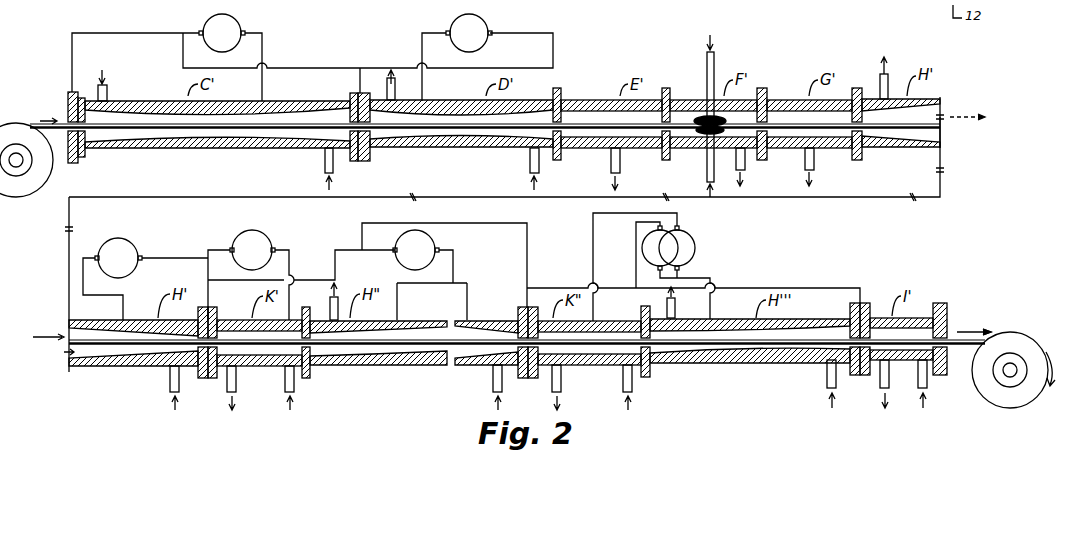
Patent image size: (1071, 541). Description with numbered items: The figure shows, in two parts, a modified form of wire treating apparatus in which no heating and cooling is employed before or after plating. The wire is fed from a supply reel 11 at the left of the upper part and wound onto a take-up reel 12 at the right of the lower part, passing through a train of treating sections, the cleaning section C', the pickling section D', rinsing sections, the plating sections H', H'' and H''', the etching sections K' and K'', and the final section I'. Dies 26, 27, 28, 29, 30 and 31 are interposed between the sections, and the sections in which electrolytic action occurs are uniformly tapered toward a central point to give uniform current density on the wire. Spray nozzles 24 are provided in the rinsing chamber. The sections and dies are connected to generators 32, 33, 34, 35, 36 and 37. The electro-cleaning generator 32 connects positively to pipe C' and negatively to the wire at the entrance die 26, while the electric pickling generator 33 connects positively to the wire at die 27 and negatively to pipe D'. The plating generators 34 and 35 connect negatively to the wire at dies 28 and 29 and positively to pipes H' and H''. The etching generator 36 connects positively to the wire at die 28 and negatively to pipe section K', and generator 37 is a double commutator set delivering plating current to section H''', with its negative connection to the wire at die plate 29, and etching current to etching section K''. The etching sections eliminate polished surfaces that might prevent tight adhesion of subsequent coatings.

The supply reel 11 is at (18, 197).
The take-up reel 12 is at (1006, 408).
The spray nozzles 24 is at (718, 62).
The entrance die 26 is at (68, 92).
The die 27 is at (352, 92).
The die 28 is at (217, 307).
The die plate 29 is at (520, 307).
The die 30 is at (870, 303).
The die 31 is at (947, 303).
The electro-cleaning generator 32 is at (312, 57).
The electric pickling generator 33 is at (465, 57).
The plating generator 34 is at (144, 279).
The plating generator 35 is at (444, 271).
The etching generator 36 is at (301, 275).
The generator (double commutator set) 37 is at (697, 252).